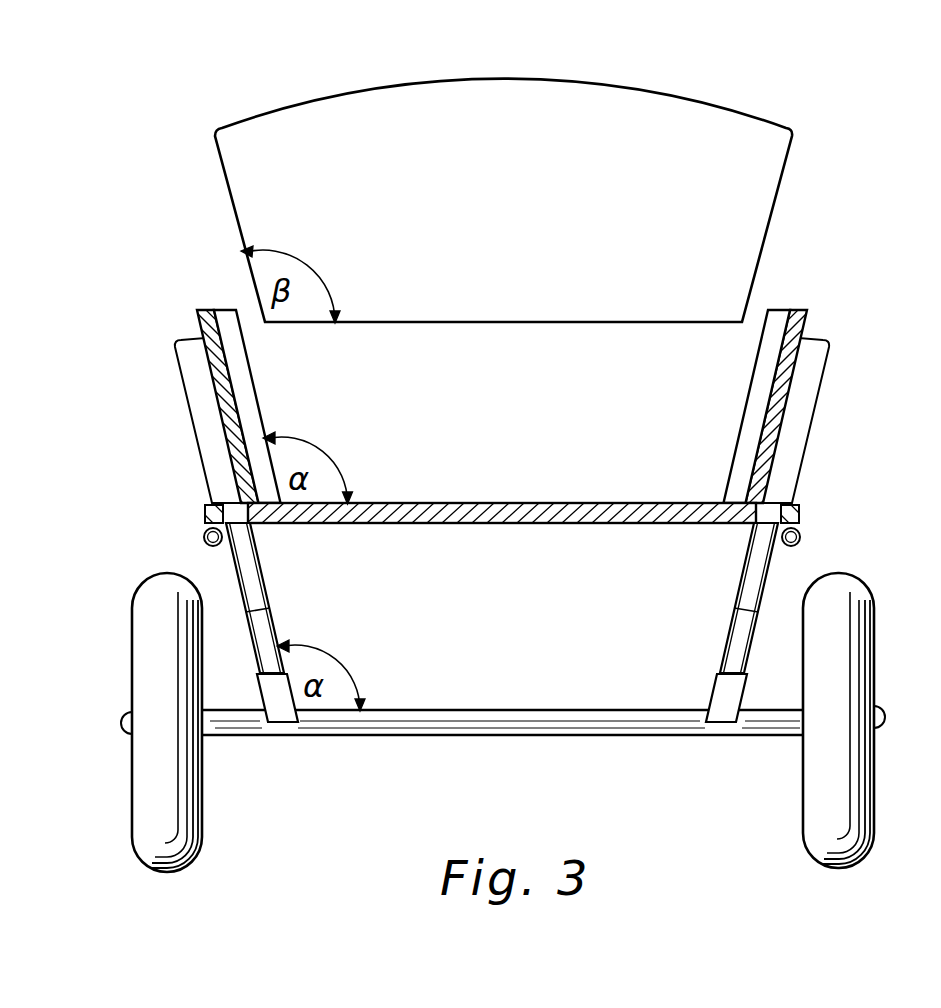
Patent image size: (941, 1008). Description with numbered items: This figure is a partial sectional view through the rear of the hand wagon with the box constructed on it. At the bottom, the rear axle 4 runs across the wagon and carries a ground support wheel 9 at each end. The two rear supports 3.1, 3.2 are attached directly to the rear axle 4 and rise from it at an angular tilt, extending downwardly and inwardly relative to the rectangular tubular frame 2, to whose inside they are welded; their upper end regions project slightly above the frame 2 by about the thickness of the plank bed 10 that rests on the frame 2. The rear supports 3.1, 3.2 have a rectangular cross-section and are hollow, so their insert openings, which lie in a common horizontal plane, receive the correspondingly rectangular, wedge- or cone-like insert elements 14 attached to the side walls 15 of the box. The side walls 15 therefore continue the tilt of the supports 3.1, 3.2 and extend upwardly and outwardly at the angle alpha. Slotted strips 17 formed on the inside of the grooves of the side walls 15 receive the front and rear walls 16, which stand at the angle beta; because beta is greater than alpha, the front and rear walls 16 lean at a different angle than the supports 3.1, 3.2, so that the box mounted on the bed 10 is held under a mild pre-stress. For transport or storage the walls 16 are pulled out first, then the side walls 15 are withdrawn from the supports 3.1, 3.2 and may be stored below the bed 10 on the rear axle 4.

The rectangular tubular frame 2 is at (203, 538).
The rear support 3.1 is at (277, 633).
The rear support 3.2 is at (727, 631).
The rear axle 4 is at (506, 737).
The ground support wheel 9 is at (860, 665).
The plank bed 10 is at (205, 511).
The insert element 14 is at (196, 387).
The side wall 15 is at (796, 316).
The front and rear wall 16 is at (497, 98).
The slotted strip 17 is at (246, 380).